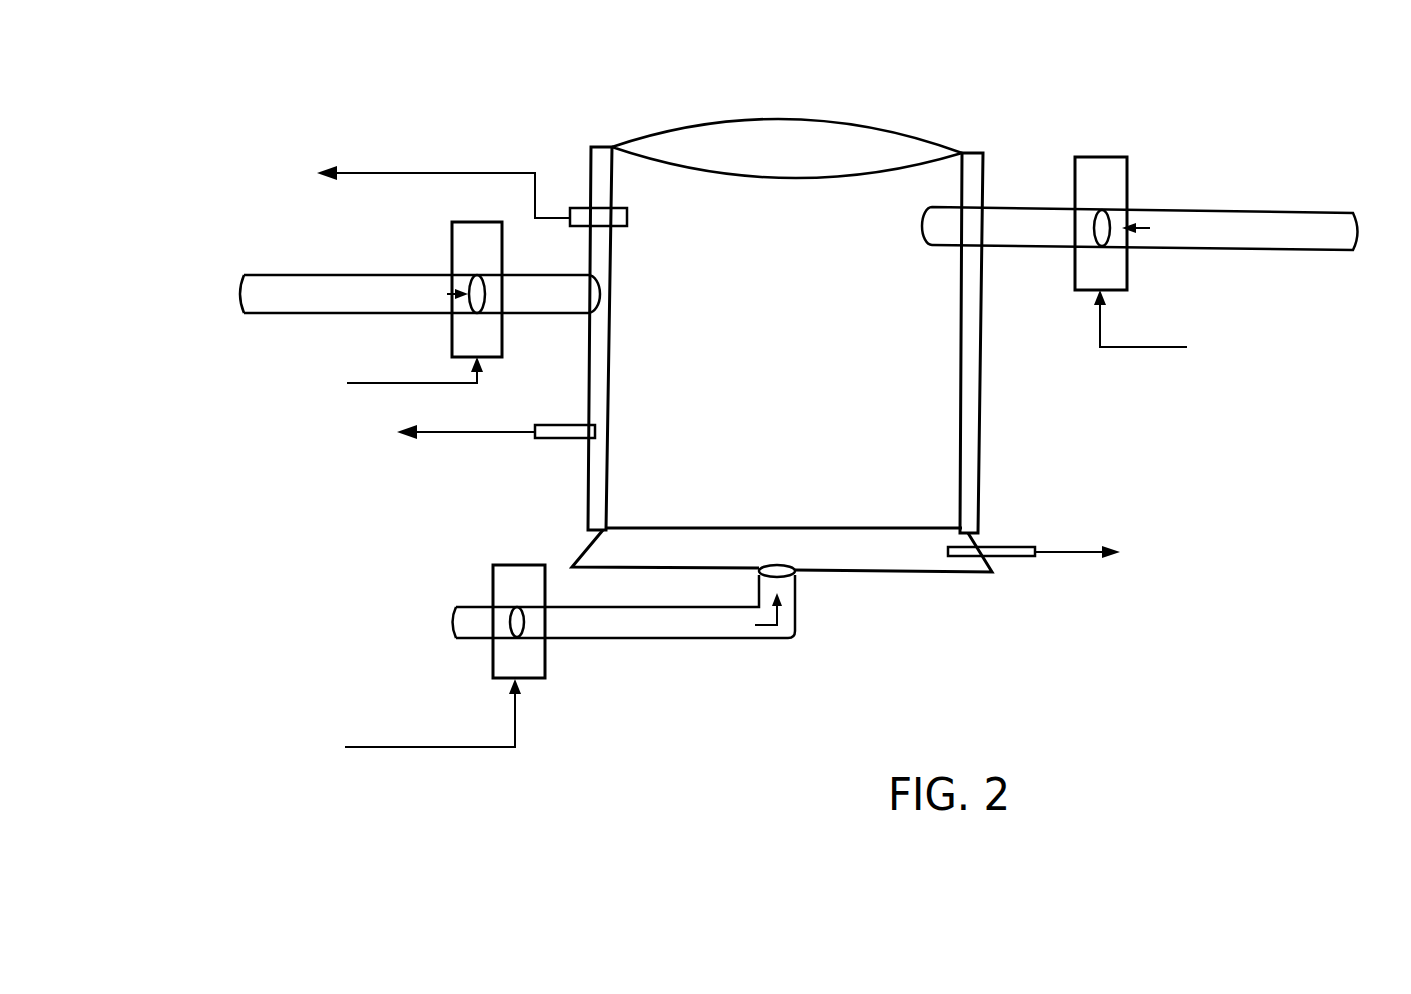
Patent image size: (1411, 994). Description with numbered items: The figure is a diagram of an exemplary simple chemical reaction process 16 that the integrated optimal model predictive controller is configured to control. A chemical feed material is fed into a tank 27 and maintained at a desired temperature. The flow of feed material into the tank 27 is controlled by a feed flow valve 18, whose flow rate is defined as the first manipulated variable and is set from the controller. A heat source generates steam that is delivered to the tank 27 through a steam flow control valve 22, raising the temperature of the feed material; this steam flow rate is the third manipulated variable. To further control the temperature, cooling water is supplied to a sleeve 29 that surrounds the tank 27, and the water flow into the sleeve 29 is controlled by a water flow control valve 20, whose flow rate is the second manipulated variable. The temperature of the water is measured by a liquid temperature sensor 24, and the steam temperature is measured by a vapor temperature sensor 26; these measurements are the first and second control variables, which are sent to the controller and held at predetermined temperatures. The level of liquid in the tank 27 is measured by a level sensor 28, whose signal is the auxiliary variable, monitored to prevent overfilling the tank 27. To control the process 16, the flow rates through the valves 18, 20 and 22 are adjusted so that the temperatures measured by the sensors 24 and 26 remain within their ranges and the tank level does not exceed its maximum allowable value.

The process 16 is at (695, 110).
The tank 27 is at (908, 135).
The level sensor 28 is at (580, 208).
The water flow control valve 20 is at (452, 257).
The feed flow valve 18 is at (1130, 170).
The sleeve 29 is at (980, 403).
The liquid temperature sensor 24 is at (542, 440).
The vapor temperature sensor 26 is at (1023, 545).
The steam flow control valve 22 is at (530, 682).